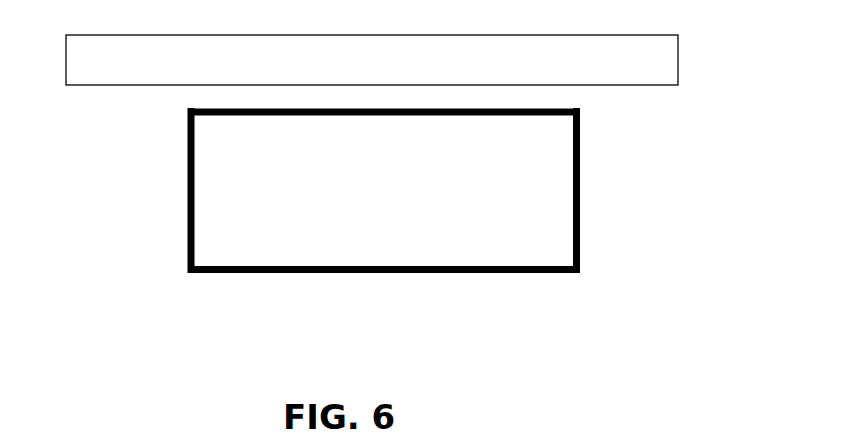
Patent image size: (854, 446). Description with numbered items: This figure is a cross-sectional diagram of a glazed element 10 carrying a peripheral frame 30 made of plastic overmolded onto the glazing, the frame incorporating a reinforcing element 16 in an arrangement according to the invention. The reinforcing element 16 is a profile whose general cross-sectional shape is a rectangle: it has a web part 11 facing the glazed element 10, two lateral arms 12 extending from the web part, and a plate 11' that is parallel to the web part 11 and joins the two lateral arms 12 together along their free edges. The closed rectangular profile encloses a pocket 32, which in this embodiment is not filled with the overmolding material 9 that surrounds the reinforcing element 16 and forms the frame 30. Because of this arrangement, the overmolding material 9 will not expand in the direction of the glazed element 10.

The glazed element 10 is at (382, 65).
The overmolding material 9 is at (384, 195).
The web part 11 is at (353, 150).
The plate 11' is at (384, 314).
The lateral arms 12 is at (188, 248).
The pocket 32 is at (555, 238).
The reinforcing element 16 is at (422, 287).
The peripheral frame 30 is at (693, 185).